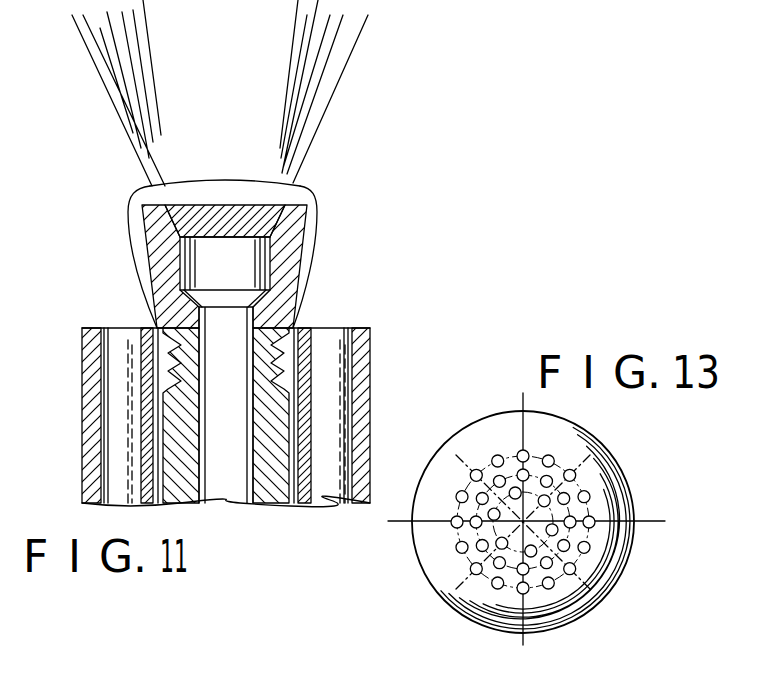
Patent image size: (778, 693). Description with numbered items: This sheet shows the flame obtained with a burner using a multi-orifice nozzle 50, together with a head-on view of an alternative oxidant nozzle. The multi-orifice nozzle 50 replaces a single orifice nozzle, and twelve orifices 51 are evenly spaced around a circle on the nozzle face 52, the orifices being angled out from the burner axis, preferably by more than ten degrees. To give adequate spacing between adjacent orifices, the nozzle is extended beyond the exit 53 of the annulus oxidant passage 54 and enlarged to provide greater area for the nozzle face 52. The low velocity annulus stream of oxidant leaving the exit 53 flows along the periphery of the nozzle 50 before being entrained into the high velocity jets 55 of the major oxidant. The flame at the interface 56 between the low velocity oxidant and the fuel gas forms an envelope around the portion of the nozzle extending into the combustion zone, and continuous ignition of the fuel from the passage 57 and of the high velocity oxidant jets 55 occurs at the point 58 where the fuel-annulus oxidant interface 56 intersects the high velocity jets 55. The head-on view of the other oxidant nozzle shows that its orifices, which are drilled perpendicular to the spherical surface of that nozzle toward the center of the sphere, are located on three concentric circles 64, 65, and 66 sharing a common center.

In FIG. 11, the multi-orifice nozzle 50 is at (307, 243).
In FIG. 11, the orifices 51 is at (287, 204).
In FIG. 11, the nozzle face 52 is at (206, 205).
In FIG. 11, the exit of the annulus oxidant passage 53 is at (150, 326).
In FIG. 11, the annulus oxidant passage 54 is at (290, 372).
In FIG. 11, the high velocity jets 55 is at (347, 68).
In FIG. 11, the interface 56 is at (128, 243).
In FIG. 11, the fuel passage 57 is at (127, 403).
In FIG. 11, the ignition point 58 is at (293, 186).
In FIG. 13, the concentric circle 64 is at (577, 487).
In FIG. 13, the concentric circle 65 is at (478, 532).
In FIG. 13, the concentric circle 66 is at (470, 520).